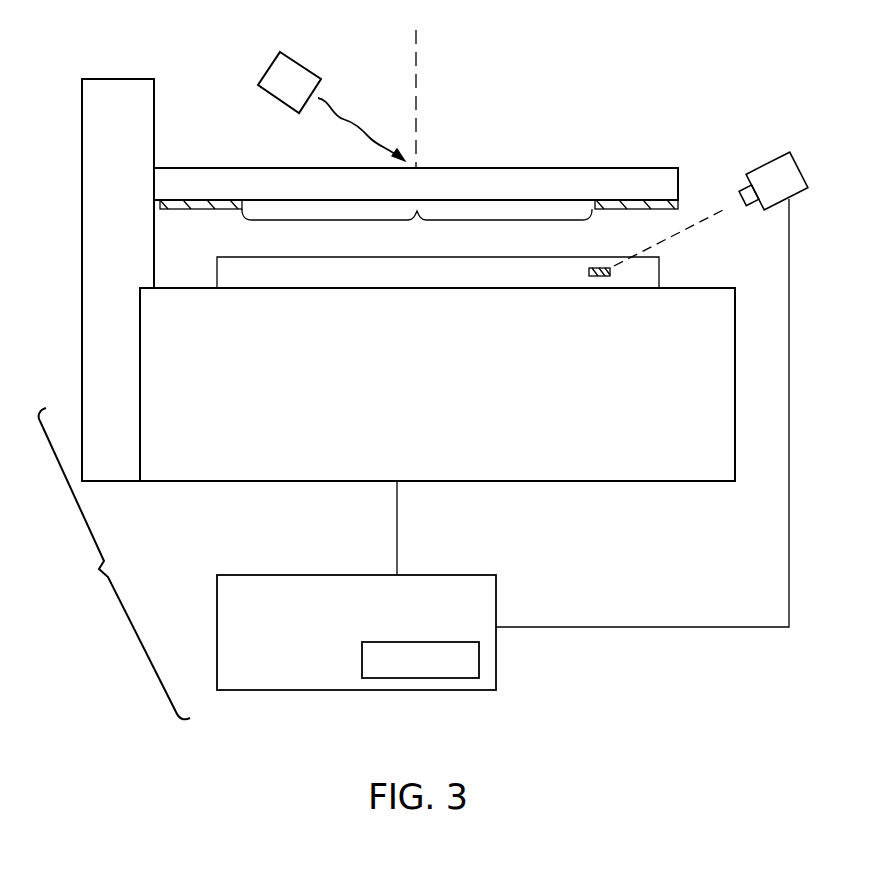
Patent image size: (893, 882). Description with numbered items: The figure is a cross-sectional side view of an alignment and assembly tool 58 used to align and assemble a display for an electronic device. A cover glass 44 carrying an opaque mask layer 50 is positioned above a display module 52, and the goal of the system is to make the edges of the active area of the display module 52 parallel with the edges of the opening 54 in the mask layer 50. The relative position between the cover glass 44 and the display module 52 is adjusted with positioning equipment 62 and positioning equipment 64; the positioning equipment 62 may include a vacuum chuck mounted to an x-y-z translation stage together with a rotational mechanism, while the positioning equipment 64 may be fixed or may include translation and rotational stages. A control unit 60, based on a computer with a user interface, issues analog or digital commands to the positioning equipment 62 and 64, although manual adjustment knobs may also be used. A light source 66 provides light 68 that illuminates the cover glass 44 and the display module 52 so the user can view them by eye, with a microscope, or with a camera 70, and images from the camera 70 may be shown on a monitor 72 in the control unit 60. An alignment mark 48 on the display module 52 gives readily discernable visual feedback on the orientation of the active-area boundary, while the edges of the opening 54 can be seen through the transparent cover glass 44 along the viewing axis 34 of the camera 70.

The optical axis 34 is at (416, 61).
The cover glass 44 is at (558, 168).
The alignment mark 48 is at (612, 270).
The opaque mask layer 50 is at (203, 210).
The display module 52 is at (355, 268).
The opening 54 is at (417, 231).
The alignment and assembly tool 58 is at (114, 563).
The control unit 60 is at (463, 575).
The positioning equipment 62 is at (575, 482).
The positioning equipment 64 is at (95, 289).
The light source 66 is at (298, 62).
The light 68 is at (338, 118).
The camera 70 is at (776, 172).
The monitor 72 is at (425, 678).